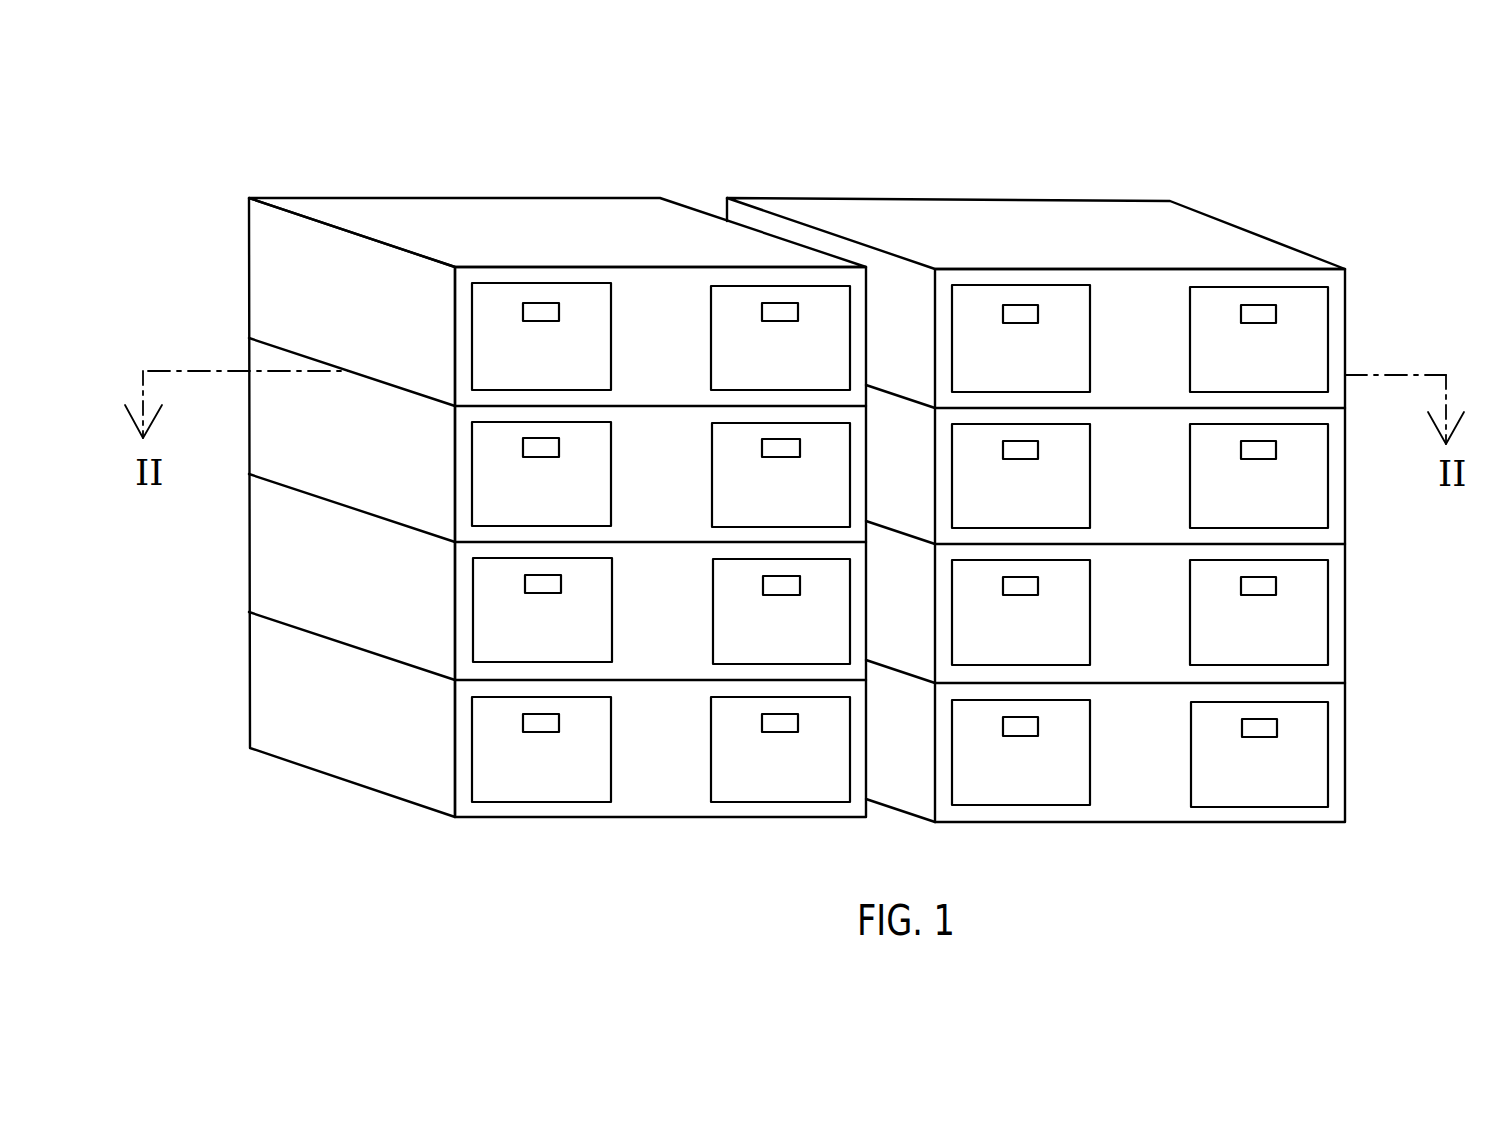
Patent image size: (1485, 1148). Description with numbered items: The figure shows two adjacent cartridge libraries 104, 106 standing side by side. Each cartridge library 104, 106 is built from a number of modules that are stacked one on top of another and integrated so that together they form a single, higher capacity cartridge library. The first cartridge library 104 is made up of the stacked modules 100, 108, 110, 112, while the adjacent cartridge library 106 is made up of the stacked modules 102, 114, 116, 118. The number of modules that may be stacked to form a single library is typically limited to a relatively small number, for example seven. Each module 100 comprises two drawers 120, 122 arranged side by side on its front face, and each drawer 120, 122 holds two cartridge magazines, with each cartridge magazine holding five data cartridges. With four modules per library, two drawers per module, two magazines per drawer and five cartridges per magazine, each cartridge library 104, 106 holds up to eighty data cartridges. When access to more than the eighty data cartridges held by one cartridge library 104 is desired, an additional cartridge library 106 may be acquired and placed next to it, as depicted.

The module 100 is at (249, 353).
The module 102 is at (1345, 512).
The cartridge library 104 is at (590, 198).
The cartridge library 106 is at (967, 198).
The module 108 is at (249, 269).
The module 110 is at (249, 540).
The module 112 is at (250, 677).
The module 114 is at (1345, 342).
The module 116 is at (1345, 615).
The module 118 is at (1345, 750).
The drawer 120 is at (611, 474).
The drawer 122 is at (712, 472).